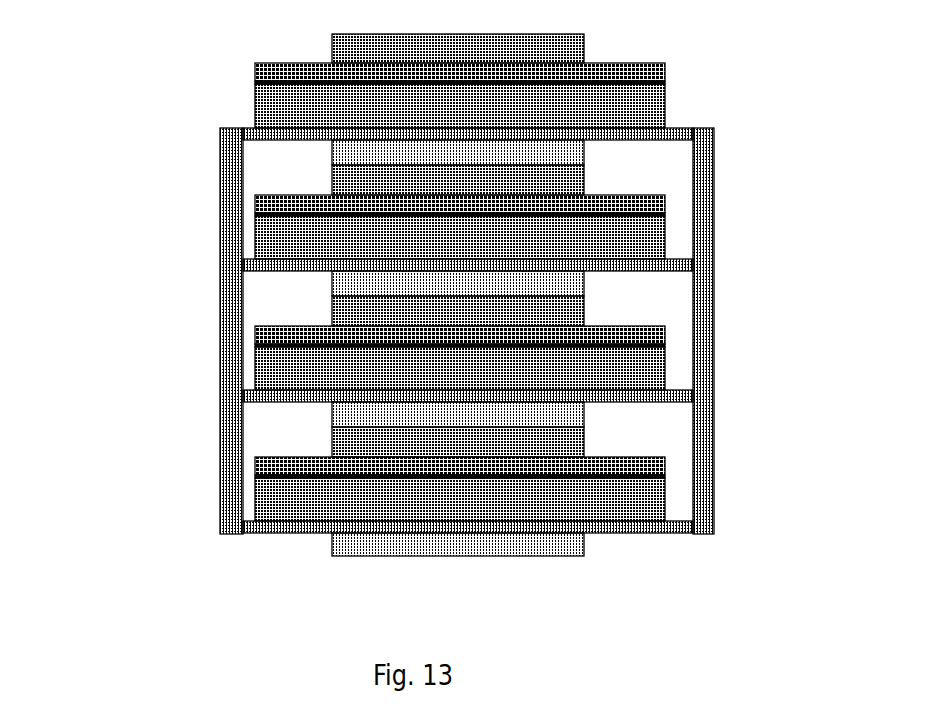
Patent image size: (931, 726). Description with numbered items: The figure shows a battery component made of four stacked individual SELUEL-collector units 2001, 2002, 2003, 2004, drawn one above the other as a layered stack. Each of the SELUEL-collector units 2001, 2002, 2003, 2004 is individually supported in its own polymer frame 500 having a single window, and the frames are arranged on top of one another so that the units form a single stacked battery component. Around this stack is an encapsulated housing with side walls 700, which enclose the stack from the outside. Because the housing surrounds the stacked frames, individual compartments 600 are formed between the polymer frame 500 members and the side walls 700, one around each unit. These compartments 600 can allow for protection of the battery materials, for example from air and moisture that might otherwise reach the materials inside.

The SELUEL-collector unit 2001 is at (172, 428).
The SELUEL-collector unit 2002 is at (172, 299).
The SELUEL-collector unit 2003 is at (172, 171).
The SELUEL-collector unit 2004 is at (172, 43).
The polymer frame 500 is at (682, 538).
The compartment 600 is at (440, 478).
The side wall 700 is at (724, 208).